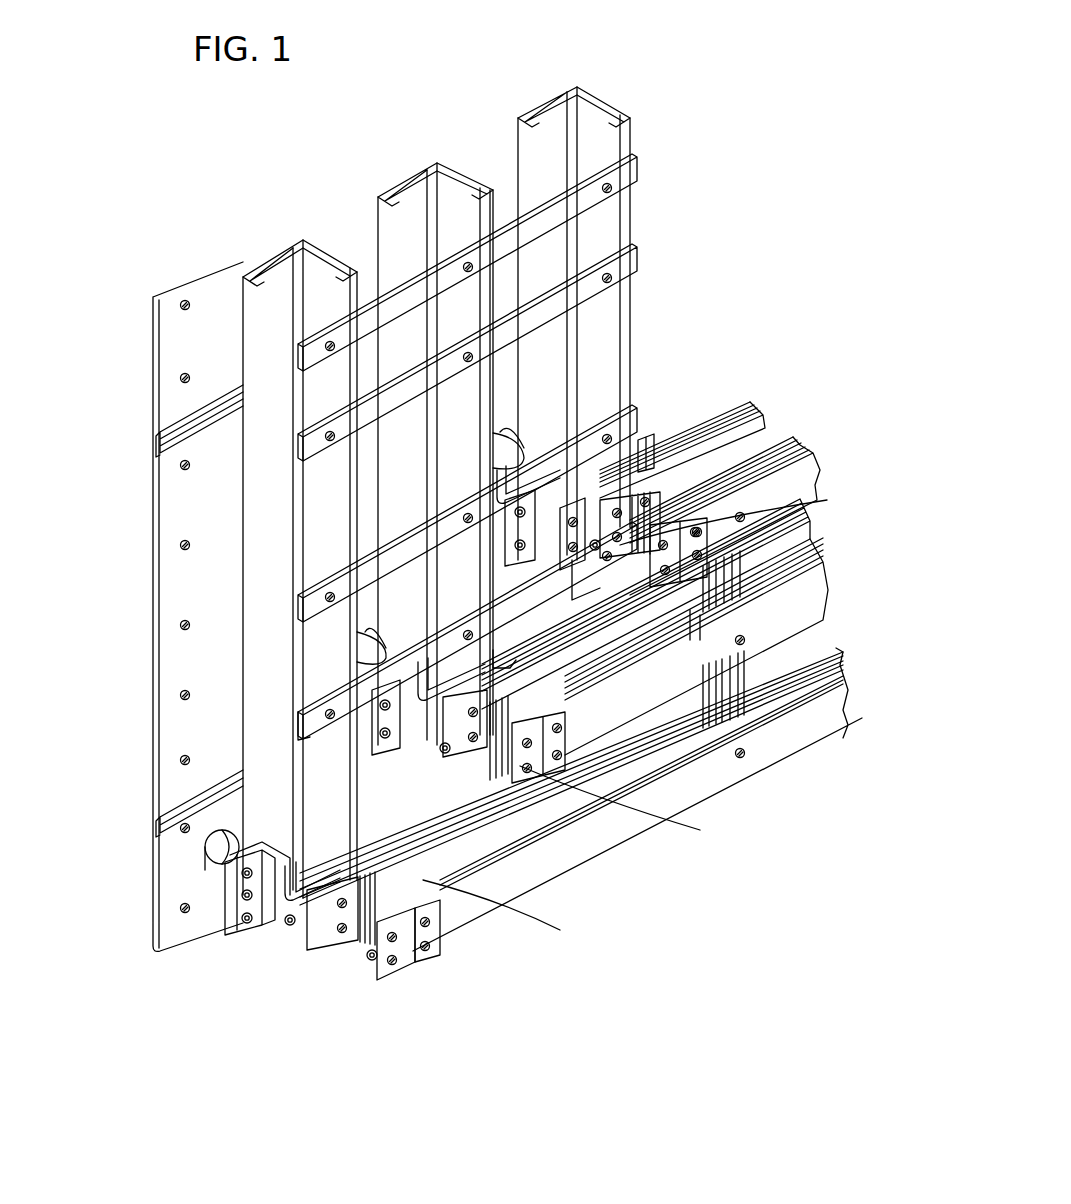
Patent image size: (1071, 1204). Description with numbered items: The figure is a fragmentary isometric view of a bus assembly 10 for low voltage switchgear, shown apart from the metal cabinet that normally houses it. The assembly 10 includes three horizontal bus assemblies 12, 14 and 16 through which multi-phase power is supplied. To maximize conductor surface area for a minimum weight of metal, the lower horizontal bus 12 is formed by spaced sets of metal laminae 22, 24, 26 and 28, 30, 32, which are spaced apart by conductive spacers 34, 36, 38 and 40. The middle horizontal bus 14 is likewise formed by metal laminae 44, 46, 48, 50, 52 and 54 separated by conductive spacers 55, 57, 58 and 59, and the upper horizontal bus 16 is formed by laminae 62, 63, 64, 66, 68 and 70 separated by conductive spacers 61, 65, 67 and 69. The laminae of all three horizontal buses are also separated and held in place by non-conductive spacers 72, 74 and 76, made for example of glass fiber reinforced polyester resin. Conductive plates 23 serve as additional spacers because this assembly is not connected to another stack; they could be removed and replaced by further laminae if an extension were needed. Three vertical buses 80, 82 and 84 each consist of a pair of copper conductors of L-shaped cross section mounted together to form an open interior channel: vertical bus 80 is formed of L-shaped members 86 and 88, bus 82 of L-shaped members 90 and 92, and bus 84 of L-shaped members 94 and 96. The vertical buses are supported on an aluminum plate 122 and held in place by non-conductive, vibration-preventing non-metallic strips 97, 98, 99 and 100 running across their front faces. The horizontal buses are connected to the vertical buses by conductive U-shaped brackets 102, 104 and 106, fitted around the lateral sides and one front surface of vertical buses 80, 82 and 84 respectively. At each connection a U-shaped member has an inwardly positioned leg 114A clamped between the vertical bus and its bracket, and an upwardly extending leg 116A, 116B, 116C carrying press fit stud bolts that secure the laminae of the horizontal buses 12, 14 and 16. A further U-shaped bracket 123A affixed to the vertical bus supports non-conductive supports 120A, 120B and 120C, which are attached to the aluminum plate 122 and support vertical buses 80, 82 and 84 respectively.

The bus assembly 10 is at (796, 208).
The horizontal bus 12 is at (616, 831).
The horizontal bus 14 is at (677, 700).
The upper horizontal bus 16 is at (725, 458).
The metal lamina 22 is at (318, 862).
The conductive plate 23 is at (592, 548).
The metal lamina 24 is at (416, 848).
The metal lamina 26 is at (507, 836).
The metal lamina 28 is at (827, 657).
The metal lamina 30 is at (836, 662).
The metal lamina 32 is at (553, 870).
The conductive spacer 34 is at (364, 875).
The conductive spacer 36 is at (346, 958).
The conductive spacer 38 is at (400, 962).
The conductive spacer 40 is at (406, 975).
The metal lamina 44 is at (436, 680).
The metal lamina 46 is at (672, 650).
The metal lamina 48 is at (600, 670).
The metal lamina 50 is at (806, 552).
The metal lamina 52 is at (818, 554).
The metal lamina 54 is at (808, 614).
The conductive spacer 55 is at (511, 664).
The conductive spacer 57 is at (468, 762).
The conductive spacer 58 is at (556, 703).
The conductive spacer 59 is at (515, 775).
The conductive spacer 61 is at (648, 446).
The lamina 62 is at (752, 400).
The lamina 63 is at (760, 407).
The lamina 64 is at (770, 416).
The conductive spacer 65 is at (606, 592).
The lamina 66 is at (801, 442).
The conductive spacer 67 is at (688, 500).
The lamina 68 is at (758, 508).
The conductive spacer 69 is at (658, 580).
The lamina 70 is at (790, 509).
The non-conductive spacer 72 is at (713, 720).
The non-conductive spacer 74 is at (741, 752).
The non-conductive spacer 76 is at (742, 712).
The vertical bus 80 is at (300, 534).
The vertical bus 82 is at (430, 436).
The vertical bus 84 is at (595, 298).
The L-shaped member 86 is at (278, 335).
The L-shaped member 88 is at (313, 265).
The L-shaped member 90 is at (420, 250).
The L-shaped member 92 is at (398, 135).
The L-shaped member 94 is at (553, 169).
The L-shaped member 96 is at (607, 128).
The non-metallic strip 97 is at (637, 168).
The non-metallic strip 98 is at (637, 258).
The non-metallic strip 99 is at (637, 418).
The non-metallic strip 100 is at (310, 733).
The U-shaped bracket 102 is at (268, 905).
The U-shaped bracket 104 is at (411, 744).
The U-shaped bracket 106 is at (539, 556).
The angle bracket 114A is at (300, 878).
The support bracket 116A is at (423, 882).
The support bracket 116B is at (520, 770).
The support bracket 116C is at (827, 500).
The non-conductive support 120A is at (205, 848).
The non-conductive support 120B is at (360, 640).
The non-conductive support 120C is at (522, 445).
The aluminum plate 122 is at (225, 512).
The fasteners 123A is at (242, 903).